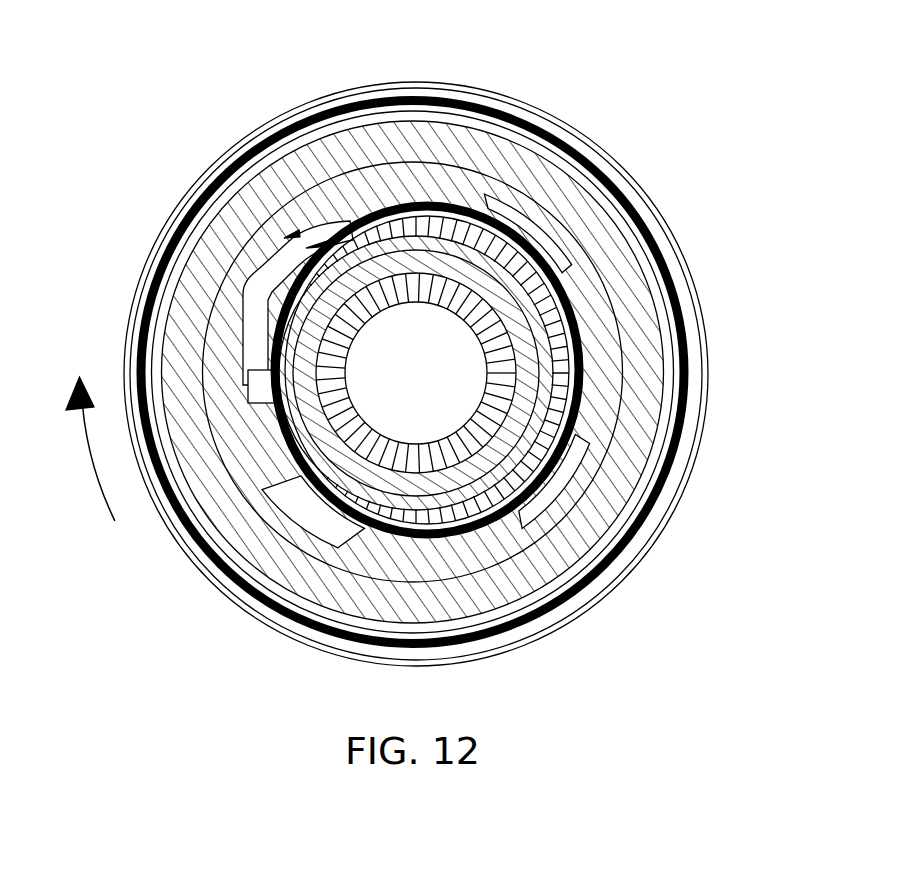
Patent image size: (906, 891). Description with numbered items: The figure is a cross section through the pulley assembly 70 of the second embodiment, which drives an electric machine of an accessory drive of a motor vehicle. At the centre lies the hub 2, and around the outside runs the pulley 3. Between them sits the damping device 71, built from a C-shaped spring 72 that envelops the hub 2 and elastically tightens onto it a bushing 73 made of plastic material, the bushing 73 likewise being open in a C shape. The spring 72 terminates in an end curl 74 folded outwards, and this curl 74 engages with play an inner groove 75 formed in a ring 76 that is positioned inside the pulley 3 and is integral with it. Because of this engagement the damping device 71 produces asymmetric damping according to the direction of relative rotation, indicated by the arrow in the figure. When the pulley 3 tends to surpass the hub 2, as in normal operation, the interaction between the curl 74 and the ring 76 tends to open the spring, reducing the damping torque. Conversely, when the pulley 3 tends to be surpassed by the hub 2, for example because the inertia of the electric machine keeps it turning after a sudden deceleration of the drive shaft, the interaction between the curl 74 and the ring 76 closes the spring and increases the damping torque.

The pulley assembly 70 is at (688, 165).
The ring 76 is at (446, 185).
The inner groove 75 is at (236, 192).
The end curl 74 is at (297, 241).
The bushing 73 is at (607, 468).
The C-shaped spring 72 is at (577, 357).
The damping device 71 is at (549, 500).
The hub 2 is at (585, 405).
The pulley 3 is at (230, 608).